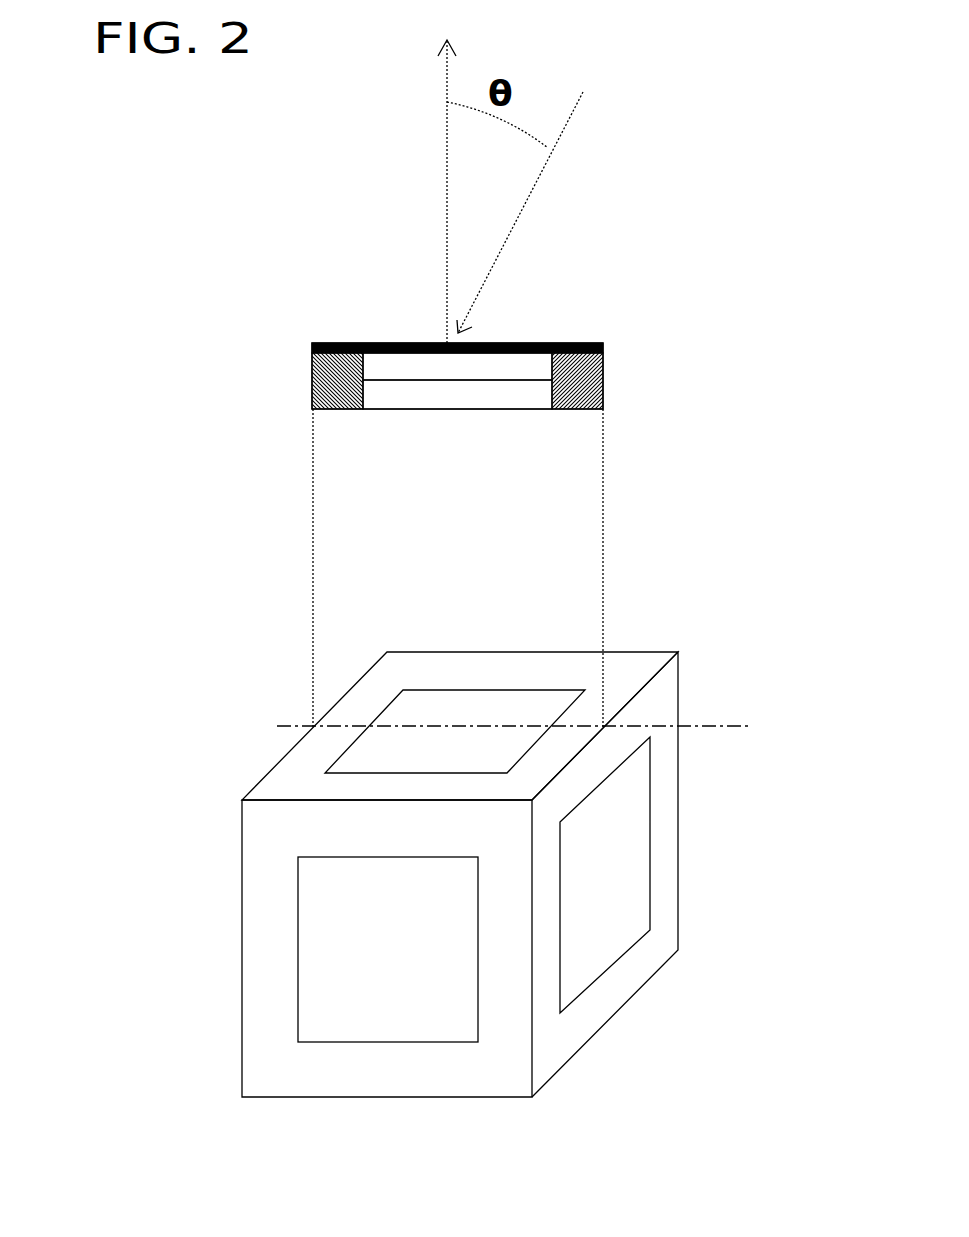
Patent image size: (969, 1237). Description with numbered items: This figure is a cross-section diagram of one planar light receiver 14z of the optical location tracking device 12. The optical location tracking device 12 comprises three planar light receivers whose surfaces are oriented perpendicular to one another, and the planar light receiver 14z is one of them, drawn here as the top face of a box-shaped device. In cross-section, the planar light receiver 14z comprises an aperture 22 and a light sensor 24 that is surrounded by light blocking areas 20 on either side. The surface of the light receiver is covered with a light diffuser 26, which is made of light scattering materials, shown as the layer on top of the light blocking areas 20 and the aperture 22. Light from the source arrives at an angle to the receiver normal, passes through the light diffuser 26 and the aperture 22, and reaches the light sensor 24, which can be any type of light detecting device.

The optical location tracking device 12 is at (260, 935).
The planar light receiver 14z is at (278, 778).
The light blocking areas 20 is at (587, 392).
The aperture 22 is at (495, 367).
The light sensor 24 is at (423, 395).
The light diffuser 26 is at (340, 342).